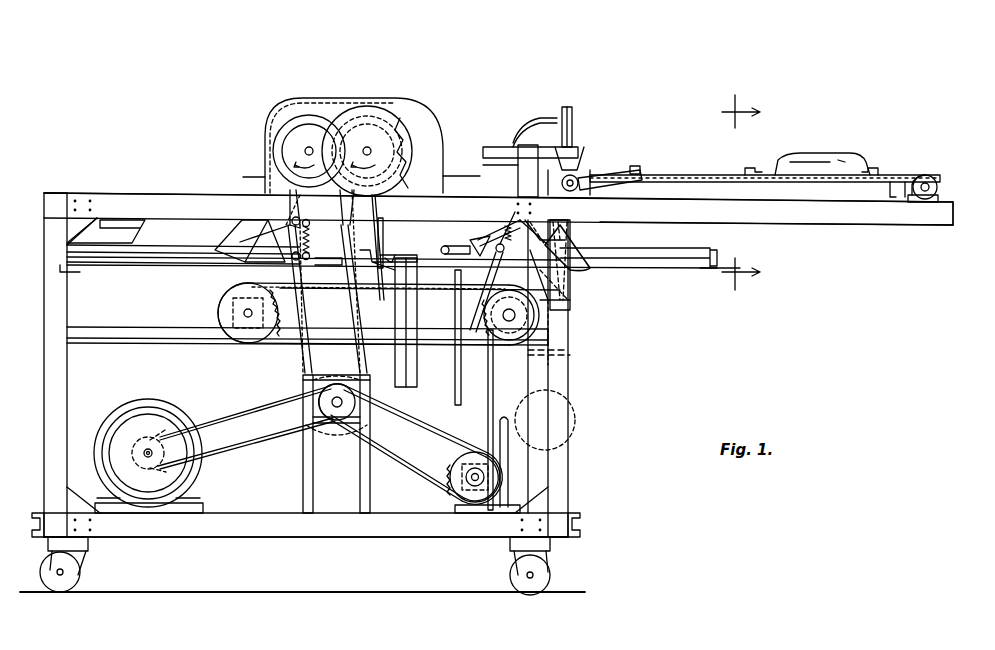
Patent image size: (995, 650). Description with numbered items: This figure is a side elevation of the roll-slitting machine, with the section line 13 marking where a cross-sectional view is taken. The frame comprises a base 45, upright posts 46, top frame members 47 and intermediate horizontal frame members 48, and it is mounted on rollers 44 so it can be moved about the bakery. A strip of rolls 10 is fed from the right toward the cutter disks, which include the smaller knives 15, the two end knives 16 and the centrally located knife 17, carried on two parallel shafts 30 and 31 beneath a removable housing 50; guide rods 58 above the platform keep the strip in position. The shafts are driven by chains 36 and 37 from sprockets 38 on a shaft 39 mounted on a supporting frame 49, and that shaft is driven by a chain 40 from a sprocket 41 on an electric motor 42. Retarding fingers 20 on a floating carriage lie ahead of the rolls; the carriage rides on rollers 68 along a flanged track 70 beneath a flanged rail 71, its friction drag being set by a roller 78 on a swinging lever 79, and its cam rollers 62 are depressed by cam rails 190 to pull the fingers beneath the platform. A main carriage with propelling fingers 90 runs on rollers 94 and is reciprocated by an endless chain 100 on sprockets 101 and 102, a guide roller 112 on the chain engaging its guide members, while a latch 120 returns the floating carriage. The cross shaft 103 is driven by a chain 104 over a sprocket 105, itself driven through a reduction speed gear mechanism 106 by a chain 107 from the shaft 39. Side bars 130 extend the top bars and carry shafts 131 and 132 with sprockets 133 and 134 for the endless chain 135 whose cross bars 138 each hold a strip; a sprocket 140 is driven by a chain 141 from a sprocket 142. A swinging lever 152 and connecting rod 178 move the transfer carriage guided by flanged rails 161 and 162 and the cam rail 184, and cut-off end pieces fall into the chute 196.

The strip of rolls 10 is at (815, 160).
The section line 13— 13 is at (755, 194).
The knives 15 is at (300, 115).
The end knives 16 is at (367, 148).
The centrally located knife 17 is at (392, 128).
The fingers 20 is at (312, 240).
The shaft 30 is at (305, 148).
The shaft 31 is at (370, 146).
The chain 36 is at (310, 352).
The chain 37 is at (365, 358).
The sprockets 38 is at (360, 420).
The shaft 39 is at (336, 408).
The chain 40 is at (268, 405).
The sprocket 41 is at (176, 418).
The electric motor 42 is at (143, 420).
The rollers 44 is at (82, 575).
The base 45 is at (250, 537).
The upright posts 46 is at (44, 382).
The top frame members 47 is at (190, 205).
The intermediate horizontal frame members 48 is at (152, 327).
The supporting frame 49 is at (303, 488).
The housing 50 is at (320, 98).
The guide rods 58 is at (244, 175).
The cam rollers 62 is at (290, 228).
The rollers 68 is at (296, 258).
The flanged track 70 is at (133, 258).
The flanged rail 71 is at (146, 246).
The roller 78 is at (440, 248).
The swinging lever 79 is at (462, 238).
The fingers 90 is at (384, 229).
The rollers 94 is at (500, 255).
The endless chain 100 is at (282, 283).
The sprocket 101 is at (500, 330).
The sprocket 102 is at (238, 292).
The cross shaft 103 is at (520, 316).
The chain 104 is at (488, 400).
The sprocket 105 is at (510, 455).
The reduction speed gear mechanism 106 is at (550, 435).
The chain 107 is at (430, 478).
The guide roller 112 is at (396, 296).
The latch 120 is at (372, 258).
The side bars 130 is at (776, 211).
The shaft 131 is at (580, 180).
The shaft 132 is at (928, 180).
The sprockets 133 is at (600, 178).
The sprockets 134 is at (918, 175).
The endless chain 135 is at (695, 175).
The cross bars 138 is at (755, 170).
The sprocket 140 is at (572, 290).
The chain 141 is at (570, 300).
The sprocket 142 is at (545, 355).
The swinging lever 152 is at (622, 250).
The flanged rail 161 is at (503, 147).
The flanged rail 162 is at (505, 160).
The connecting rod 178 is at (572, 140).
The cam rail 184 is at (538, 128).
The cam rails 190 is at (130, 217).
The chute 196 is at (240, 230).